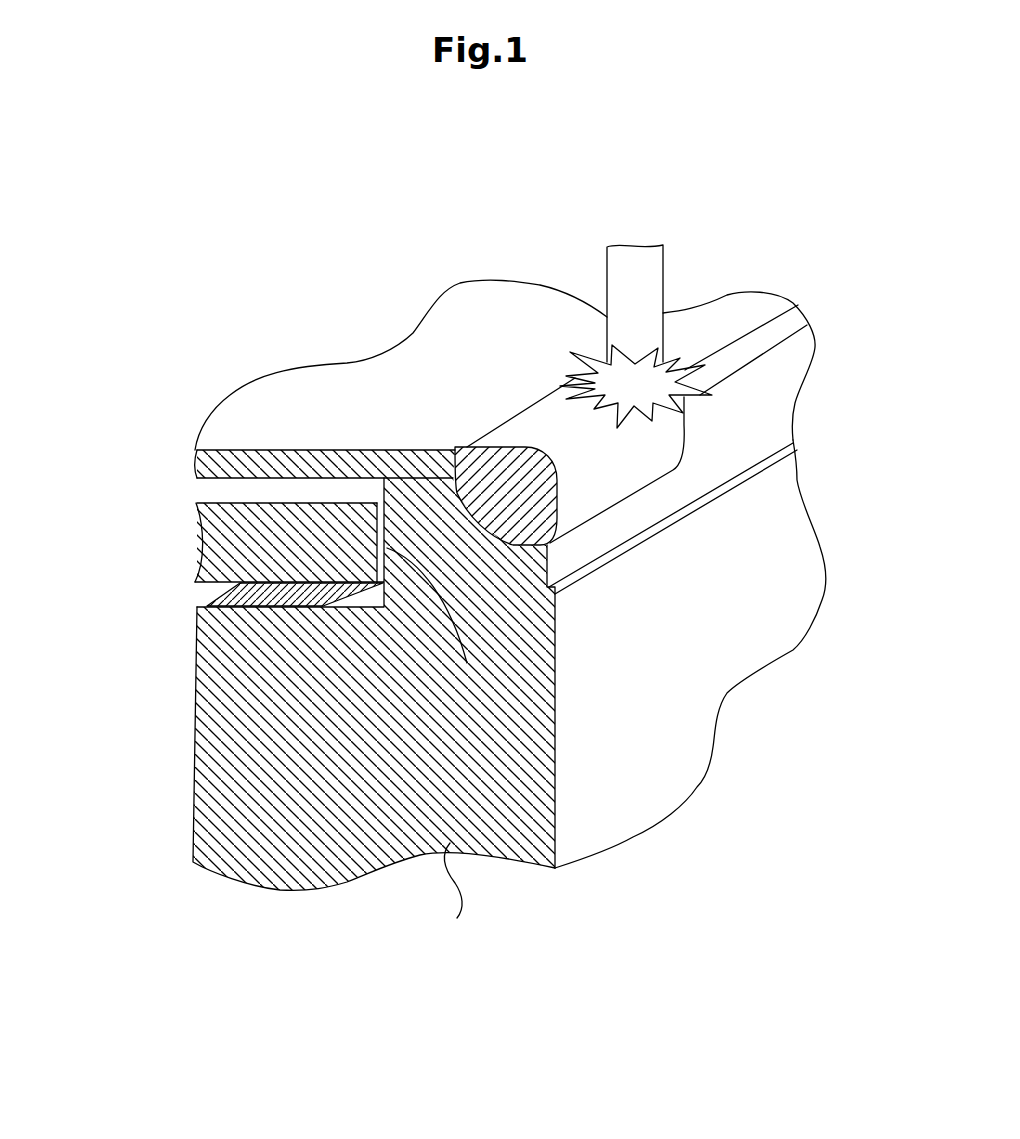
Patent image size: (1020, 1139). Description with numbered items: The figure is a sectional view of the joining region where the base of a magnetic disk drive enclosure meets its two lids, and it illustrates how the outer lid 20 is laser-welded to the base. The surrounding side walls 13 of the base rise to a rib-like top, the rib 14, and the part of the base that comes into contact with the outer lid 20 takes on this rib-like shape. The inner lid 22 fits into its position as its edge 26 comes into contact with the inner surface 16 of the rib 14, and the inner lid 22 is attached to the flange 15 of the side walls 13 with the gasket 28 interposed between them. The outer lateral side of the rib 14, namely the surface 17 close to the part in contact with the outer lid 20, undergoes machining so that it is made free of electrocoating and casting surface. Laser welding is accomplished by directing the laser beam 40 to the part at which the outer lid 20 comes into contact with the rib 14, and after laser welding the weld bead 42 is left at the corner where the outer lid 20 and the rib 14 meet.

The side walls 13 is at (613, 823).
The rib 14 is at (510, 612).
The flange 15 is at (230, 600).
The inner surface of the rib 16 is at (380, 489).
The surface 17 is at (768, 429).
The outer lid 20 is at (372, 387).
The inner lid 22 is at (213, 521).
The edge 26 is at (497, 693).
The gasket 28 is at (283, 582).
The laser beam 40 is at (647, 280).
The weld bead 42 is at (643, 450).